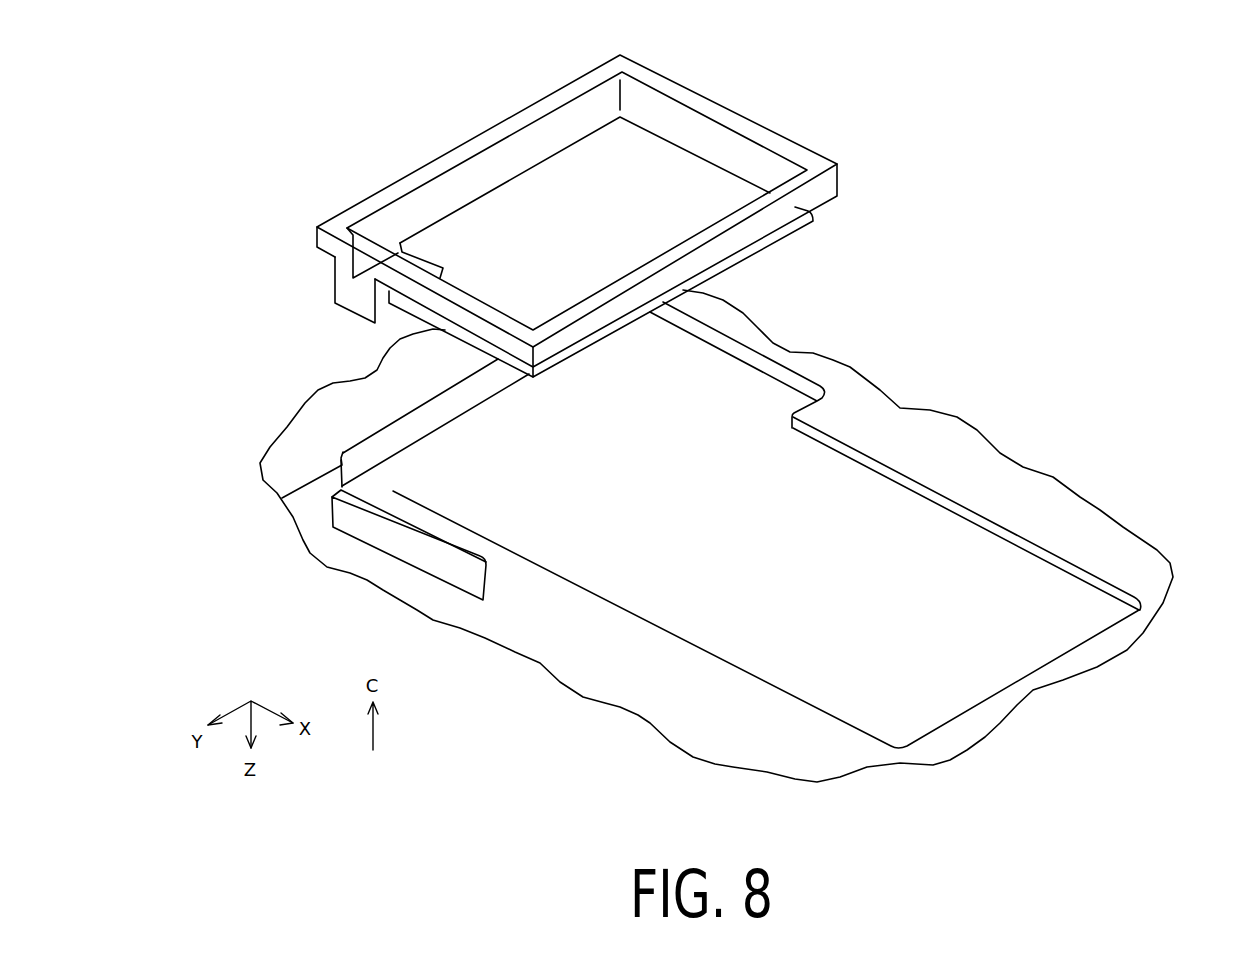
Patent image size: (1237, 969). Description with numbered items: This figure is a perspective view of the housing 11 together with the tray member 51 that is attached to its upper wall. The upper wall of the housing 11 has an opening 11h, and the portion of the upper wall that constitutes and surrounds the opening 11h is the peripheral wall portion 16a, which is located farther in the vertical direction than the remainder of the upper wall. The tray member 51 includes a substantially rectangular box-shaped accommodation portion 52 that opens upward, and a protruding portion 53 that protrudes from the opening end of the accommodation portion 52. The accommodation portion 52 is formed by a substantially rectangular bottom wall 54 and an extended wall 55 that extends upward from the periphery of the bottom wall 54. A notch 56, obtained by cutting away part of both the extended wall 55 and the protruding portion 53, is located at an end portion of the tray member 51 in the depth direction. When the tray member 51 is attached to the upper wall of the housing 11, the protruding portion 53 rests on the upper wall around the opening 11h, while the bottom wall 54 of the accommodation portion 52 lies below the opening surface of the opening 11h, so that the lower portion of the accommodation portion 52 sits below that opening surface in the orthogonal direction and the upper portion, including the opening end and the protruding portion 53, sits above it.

The housing 11 is at (1160, 559).
The opening 11h is at (937, 490).
The peripheral wall portion 16a is at (1077, 499).
The tray member 51 is at (603, 216).
The accommodation portion 52 is at (577, 180).
The protruding portion 53 is at (730, 122).
The bottom wall 54 is at (538, 187).
The extended wall 55 is at (458, 180).
The notch 56 is at (378, 302).